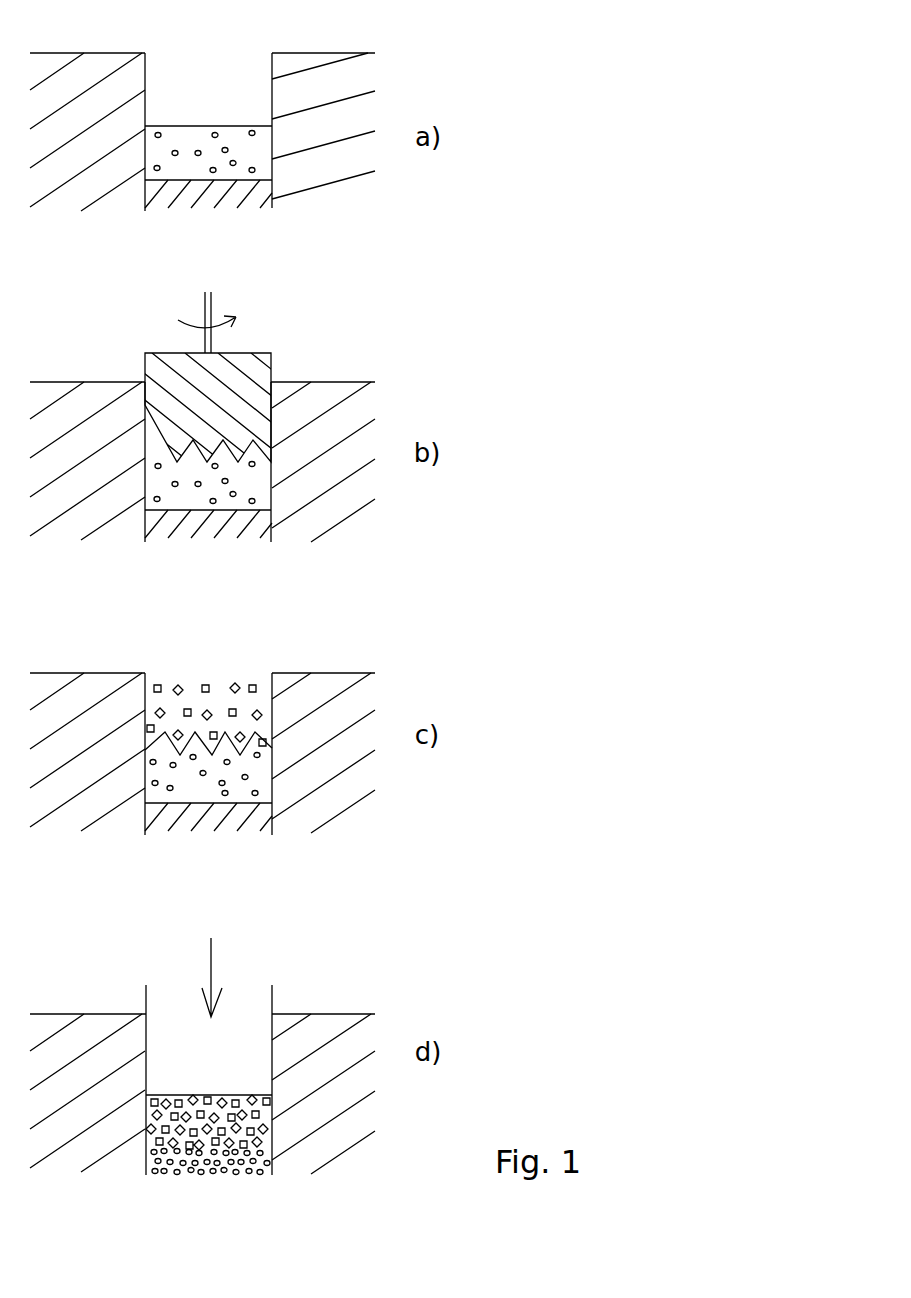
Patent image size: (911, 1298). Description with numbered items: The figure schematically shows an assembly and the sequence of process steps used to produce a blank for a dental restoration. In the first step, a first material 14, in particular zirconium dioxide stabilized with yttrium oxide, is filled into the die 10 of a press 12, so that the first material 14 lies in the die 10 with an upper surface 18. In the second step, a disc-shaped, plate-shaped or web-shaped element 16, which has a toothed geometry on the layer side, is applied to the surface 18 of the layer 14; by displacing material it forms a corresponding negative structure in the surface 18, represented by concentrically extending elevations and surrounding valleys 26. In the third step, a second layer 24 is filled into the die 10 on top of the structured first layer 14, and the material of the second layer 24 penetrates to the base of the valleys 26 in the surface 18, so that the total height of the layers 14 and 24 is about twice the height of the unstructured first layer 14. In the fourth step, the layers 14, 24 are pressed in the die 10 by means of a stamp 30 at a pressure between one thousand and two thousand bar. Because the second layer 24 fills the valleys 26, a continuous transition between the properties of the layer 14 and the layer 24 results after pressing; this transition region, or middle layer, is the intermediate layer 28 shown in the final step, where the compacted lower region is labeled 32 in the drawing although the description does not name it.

The die 10 is at (310, 150).
The press 12 is at (241, 33).
The first material 14 is at (173, 157).
The element 16 is at (237, 380).
The surface 18 is at (235, 125).
The second layer 24 is at (213, 712).
The valleys 26 is at (236, 752).
The intermediate layer 28 is at (142, 1137).
The stamp 30 is at (226, 977).
The compacted layer 32 is at (177, 1157).